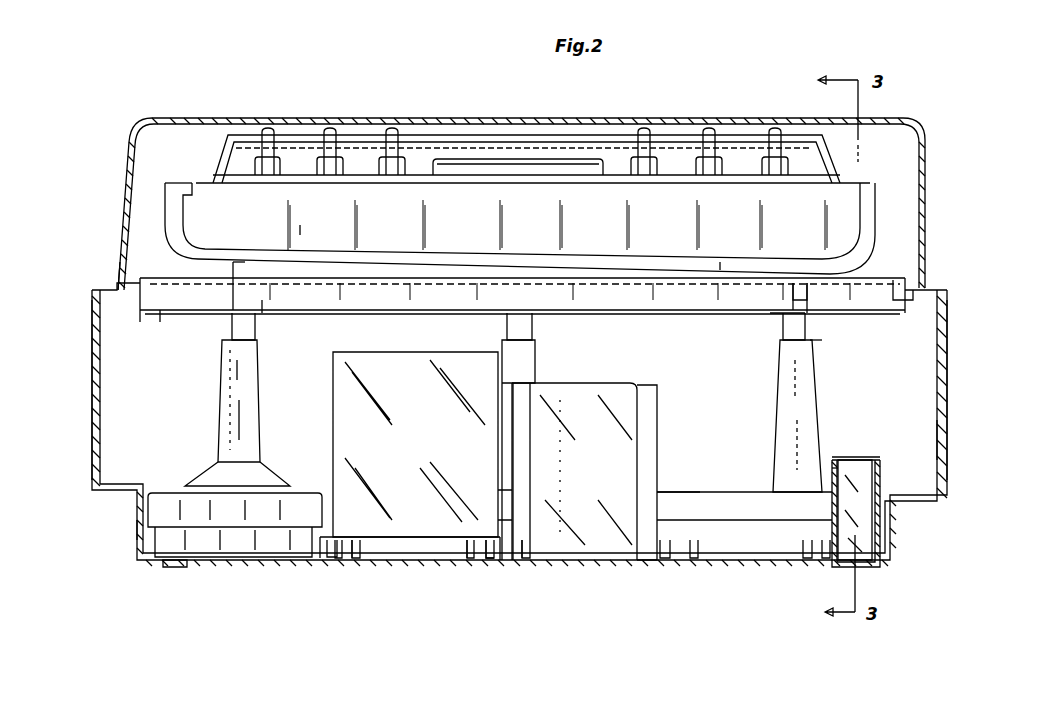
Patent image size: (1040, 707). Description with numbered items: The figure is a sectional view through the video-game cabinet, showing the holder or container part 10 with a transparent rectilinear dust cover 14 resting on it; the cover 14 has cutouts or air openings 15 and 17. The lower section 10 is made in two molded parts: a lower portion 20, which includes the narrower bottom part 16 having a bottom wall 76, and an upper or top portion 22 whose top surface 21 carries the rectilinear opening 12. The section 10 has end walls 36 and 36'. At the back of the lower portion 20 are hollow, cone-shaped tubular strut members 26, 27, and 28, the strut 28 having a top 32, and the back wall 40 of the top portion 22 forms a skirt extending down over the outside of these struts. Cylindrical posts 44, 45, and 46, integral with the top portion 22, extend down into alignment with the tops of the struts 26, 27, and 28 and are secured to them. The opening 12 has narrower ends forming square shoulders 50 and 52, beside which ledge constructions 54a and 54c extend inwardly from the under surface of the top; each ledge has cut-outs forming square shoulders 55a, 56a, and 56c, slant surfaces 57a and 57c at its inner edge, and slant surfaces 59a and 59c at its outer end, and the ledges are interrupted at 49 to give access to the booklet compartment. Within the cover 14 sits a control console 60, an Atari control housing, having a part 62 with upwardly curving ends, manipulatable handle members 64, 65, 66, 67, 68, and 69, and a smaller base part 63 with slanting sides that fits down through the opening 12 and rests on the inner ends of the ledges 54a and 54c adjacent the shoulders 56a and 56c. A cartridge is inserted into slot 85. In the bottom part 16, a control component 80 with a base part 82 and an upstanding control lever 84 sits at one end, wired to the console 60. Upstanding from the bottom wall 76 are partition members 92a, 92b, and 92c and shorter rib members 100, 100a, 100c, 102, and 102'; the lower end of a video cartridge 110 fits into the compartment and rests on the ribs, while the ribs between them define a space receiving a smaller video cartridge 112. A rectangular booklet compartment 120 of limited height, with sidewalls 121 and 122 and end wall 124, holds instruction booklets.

The holder or container part 10 is at (123, 513).
The rectilinear opening 12 is at (817, 338).
The transparent rectilinear dust cover 14 is at (777, 92).
The cutout or air opening 15 is at (310, 250).
The bottom part 16 is at (770, 537).
The cutout or air opening 17 is at (740, 260).
The lower portion 20 is at (908, 498).
The top surface 21 is at (130, 272).
The upper or top portion 22 is at (947, 366).
The tubular strut member 26 is at (260, 352).
The tubular strut member 27 is at (535, 358).
The tubular strut member 28 is at (783, 352).
The top of strut member 32 is at (834, 364).
The end wall 36 is at (76, 390).
The end wall 36' is at (961, 440).
The back wall 40 is at (680, 363).
The cylindrical post 44 is at (232, 326).
The cylindrical post 45 is at (508, 320).
The cylindrical post 46 is at (783, 325).
The ledge interruption 49 is at (897, 322).
The square shoulder 50 is at (267, 300).
The square shoulder 52 is at (767, 310).
The ledge construction 54a is at (143, 323).
The ledge construction 54c is at (738, 317).
The square shoulder 55a is at (160, 322).
The square shoulder 56a is at (273, 320).
The square shoulder 56c is at (782, 290).
The slant surface 57a is at (195, 293).
The slant surface 57c is at (853, 313).
The slant surface 59a is at (157, 292).
The slant surface 59c is at (877, 293).
The control console 60 is at (674, 165).
The console part with upwardly curving ends 62 is at (868, 222).
The base part 63 is at (553, 300).
The manipulatable handle member 64 is at (275, 130).
The manipulatable handle member 65 is at (337, 130).
The manipulatable handle member 66 is at (399, 130).
The manipulatable handle member 67 is at (641, 129).
The manipulatable handle member 68 is at (712, 128).
The manipulatable handle member 69 is at (776, 129).
The bottom wall 76 is at (408, 553).
The control component 80 is at (163, 480).
The base part 82 is at (257, 543).
The control handle or lever 84 is at (240, 397).
The slot 85 is at (528, 170).
The partition member 92a is at (330, 553).
The partial partition member 92b is at (502, 547).
The partial partition member 92c is at (655, 548).
The rib member 100 is at (533, 550).
The rib member 100a is at (467, 550).
The block portion 100c is at (637, 553).
The rib member 102 is at (433, 580).
The rib member 102' is at (546, 580).
The video cartridge 110 is at (445, 445).
The video cartridge 112 is at (657, 403).
The booklet compartment 120 is at (850, 462).
The sidewall 121 is at (833, 468).
The sidewall 122 is at (882, 482).
The end wall 124 is at (862, 463).